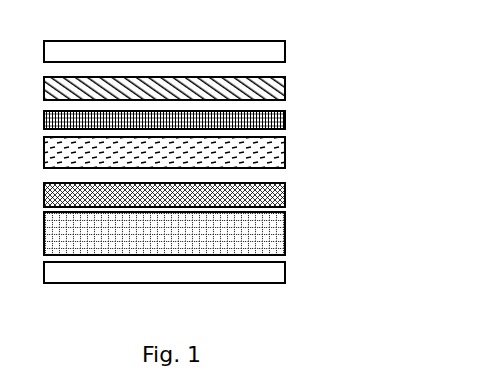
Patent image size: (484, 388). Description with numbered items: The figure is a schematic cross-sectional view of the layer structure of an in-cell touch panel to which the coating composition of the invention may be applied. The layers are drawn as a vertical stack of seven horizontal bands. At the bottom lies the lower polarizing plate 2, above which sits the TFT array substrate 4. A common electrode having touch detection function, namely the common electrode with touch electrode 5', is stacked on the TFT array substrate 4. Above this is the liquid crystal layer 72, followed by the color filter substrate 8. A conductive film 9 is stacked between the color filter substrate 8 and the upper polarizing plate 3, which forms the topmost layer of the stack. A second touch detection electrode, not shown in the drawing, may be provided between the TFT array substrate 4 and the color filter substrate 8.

The lower polarizing plate 2 is at (275, 273).
The TFT array substrate 4 is at (275, 235).
The common electrode with touch electrode 5' is at (214, 200).
The liquid crystal layer 72 is at (275, 150).
The color filter substrate 8 is at (275, 120).
The conductive film 9 is at (275, 90).
The upper polarizing plate 3 is at (275, 52).